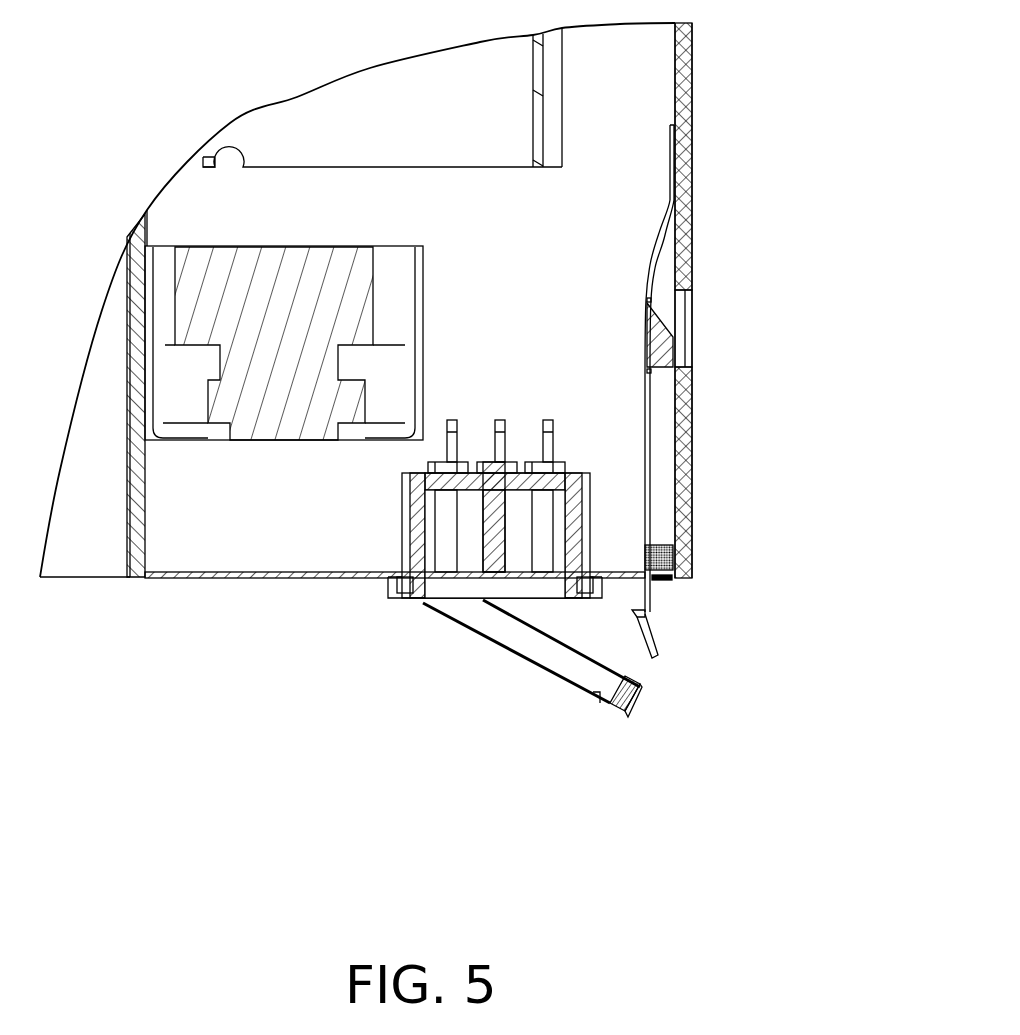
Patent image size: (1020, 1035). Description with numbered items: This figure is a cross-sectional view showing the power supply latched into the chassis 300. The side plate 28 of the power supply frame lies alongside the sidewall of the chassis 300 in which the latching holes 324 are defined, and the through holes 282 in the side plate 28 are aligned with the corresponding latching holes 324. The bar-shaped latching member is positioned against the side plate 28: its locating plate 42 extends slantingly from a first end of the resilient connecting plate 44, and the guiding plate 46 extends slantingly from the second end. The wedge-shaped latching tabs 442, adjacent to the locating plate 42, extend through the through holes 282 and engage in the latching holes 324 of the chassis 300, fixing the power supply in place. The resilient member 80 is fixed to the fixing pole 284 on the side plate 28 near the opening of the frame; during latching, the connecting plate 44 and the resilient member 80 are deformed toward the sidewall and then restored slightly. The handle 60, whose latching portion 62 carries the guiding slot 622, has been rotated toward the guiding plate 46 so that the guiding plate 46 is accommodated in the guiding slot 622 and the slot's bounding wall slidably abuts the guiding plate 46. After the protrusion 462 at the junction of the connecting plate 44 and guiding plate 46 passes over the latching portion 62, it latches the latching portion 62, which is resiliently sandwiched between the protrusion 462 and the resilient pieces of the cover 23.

The chassis 300 is at (417, 300).
The locating plate 42 is at (688, 153).
The side plate 28 is at (680, 194).
The through hole 282 is at (680, 300).
The latching hole 324 is at (688, 313).
The latching tab 442 is at (663, 352).
The resilient connecting plate 44 is at (648, 423).
The resilient member 80 is at (655, 545).
The fixing pole 284 is at (677, 547).
The protrusion 462 is at (645, 612).
The guiding plate 46 is at (655, 633).
The handle 60 is at (537, 658).
The latching portion 62 is at (612, 710).
The guiding slot 622 is at (640, 695).
The cover 23 is at (163, 580).